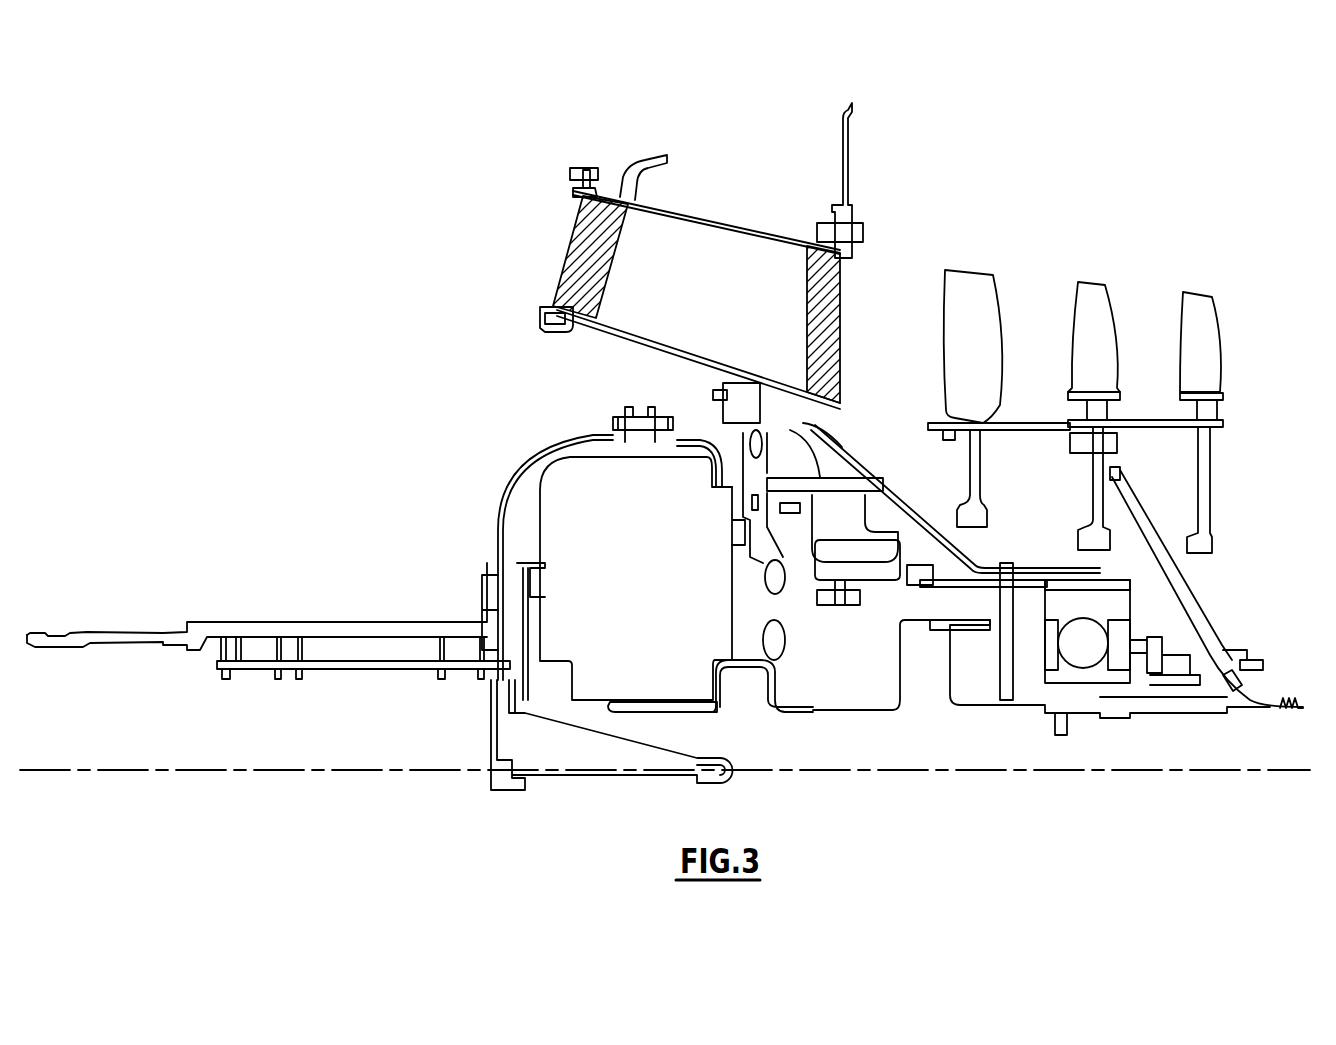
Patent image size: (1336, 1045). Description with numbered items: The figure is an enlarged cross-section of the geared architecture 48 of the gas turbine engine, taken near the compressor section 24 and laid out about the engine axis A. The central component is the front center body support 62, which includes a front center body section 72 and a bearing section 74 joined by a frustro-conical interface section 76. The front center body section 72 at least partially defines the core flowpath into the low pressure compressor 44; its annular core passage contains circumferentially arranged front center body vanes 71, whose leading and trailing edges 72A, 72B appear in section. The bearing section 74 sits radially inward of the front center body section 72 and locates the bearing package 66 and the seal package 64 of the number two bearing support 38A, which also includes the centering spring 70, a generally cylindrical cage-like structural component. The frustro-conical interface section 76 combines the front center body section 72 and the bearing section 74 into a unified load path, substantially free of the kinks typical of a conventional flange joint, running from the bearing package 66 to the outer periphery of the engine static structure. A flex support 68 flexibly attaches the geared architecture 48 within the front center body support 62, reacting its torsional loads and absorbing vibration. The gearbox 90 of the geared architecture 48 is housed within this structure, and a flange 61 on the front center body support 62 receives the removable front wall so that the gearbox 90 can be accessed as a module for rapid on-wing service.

The compressor section 24 is at (1233, 222).
The low pressure compressor 44 is at (1232, 400).
The geared architecture 48 is at (442, 508).
The flange 61 is at (557, 337).
The front center body support 62 is at (701, 256).
The seal package 64 is at (1177, 690).
The bearing package 66 is at (1098, 677).
The flex support 68 is at (873, 587).
The centering spring 70 is at (948, 593).
The front center body vanes 71 is at (544, 257).
The front center body section 72 is at (788, 397).
The leading edge 72A is at (560, 262).
The trailing edge 72B is at (843, 283).
The bearing section 74 is at (1113, 570).
The frustro-conical interface section 76 is at (915, 490).
The gearbox 90 is at (652, 583).
The #2 bearing support 38A is at (1053, 745).
The axis A is at (1287, 770).